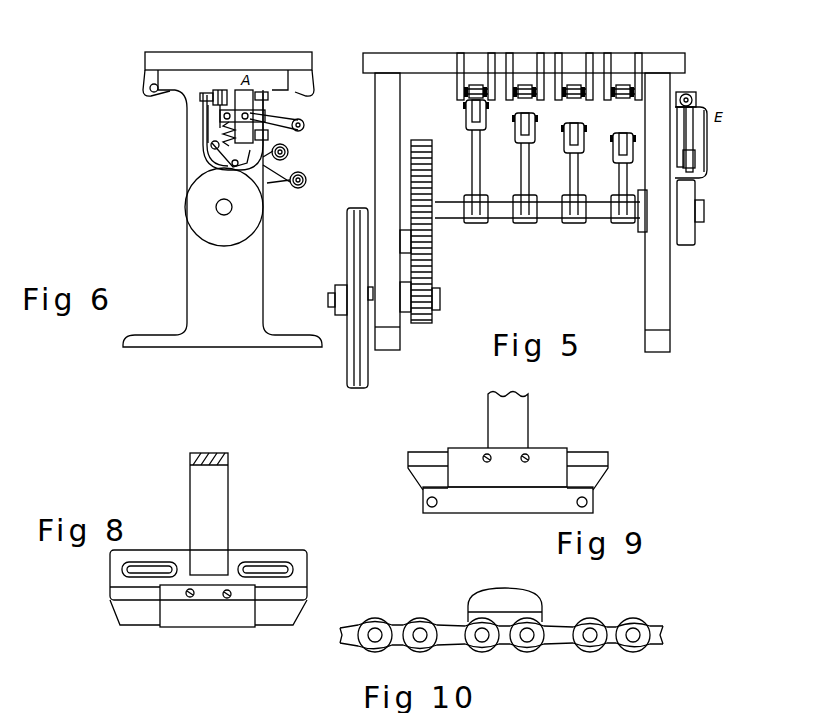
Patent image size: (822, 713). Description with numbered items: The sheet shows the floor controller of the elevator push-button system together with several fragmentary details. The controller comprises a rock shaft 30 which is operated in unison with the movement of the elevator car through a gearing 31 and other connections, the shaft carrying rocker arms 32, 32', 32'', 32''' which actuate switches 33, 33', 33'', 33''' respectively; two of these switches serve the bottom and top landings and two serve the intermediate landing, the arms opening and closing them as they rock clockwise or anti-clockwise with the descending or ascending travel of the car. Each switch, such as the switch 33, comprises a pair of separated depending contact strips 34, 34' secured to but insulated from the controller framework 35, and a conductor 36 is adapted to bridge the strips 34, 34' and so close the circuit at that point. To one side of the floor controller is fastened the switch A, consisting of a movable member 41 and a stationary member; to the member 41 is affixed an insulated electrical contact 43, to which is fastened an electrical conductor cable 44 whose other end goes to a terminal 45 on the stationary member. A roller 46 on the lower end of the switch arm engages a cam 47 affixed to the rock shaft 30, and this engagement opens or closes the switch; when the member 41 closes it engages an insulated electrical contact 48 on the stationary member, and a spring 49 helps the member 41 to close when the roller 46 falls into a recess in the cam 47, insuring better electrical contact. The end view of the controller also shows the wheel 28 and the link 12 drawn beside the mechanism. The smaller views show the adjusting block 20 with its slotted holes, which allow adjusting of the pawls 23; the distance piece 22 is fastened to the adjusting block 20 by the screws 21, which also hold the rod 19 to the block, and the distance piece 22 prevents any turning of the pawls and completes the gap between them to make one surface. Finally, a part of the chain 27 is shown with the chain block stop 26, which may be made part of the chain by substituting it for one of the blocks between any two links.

In FIG. 6, the link 12 is at (248, 116).
In FIG. 8, the rod 19 is at (217, 512).
In FIG. 9, the rod 19 is at (520, 420).
In FIG. 8, the adjusting block 20 is at (298, 578).
In FIG. 9, the adjusting block 20 is at (597, 458).
In FIG. 8, the screws 21 is at (229, 598).
In FIG. 9, the screws 21 is at (525, 462).
In FIG. 8, the distance piece 22 is at (175, 620).
In FIG. 9, the distance piece 22 is at (553, 460).
In FIG. 8, the pawls 23 is at (133, 615).
In FIG. 9, the pawls 23 is at (600, 492).
In FIG. 10, the chain block stop 26 is at (523, 607).
In FIG. 10, the chain 27 is at (567, 632).
In FIG. 5, the pulley 28 is at (357, 378).
In FIG. 6, the rock shaft 30 is at (233, 210).
In FIG. 5, the rock shaft 30 is at (500, 210).
In FIG. 5, the gearing 31 is at (428, 270).
In FIG. 5, the rocker arm 32 is at (459, 172).
In FIG. 5, the rocker arm 32' is at (510, 164).
In FIG. 5, the rocker arm 32'' is at (560, 169).
In FIG. 5, the rocker arm 32''' is at (609, 174).
In FIG. 5, the switch 33 is at (458, 92).
In FIG. 5, the switch 33' is at (525, 99).
In FIG. 5, the switch 33'' is at (576, 100).
In FIG. 5, the switch 33''' is at (624, 100).
In FIG. 5, the contact strip 34 is at (476, 61).
In FIG. 5, the contact strip 34' is at (517, 62).
In FIG. 6, the controller framework 35 is at (277, 58).
In FIG. 5, the controller framework 35 is at (447, 63).
In FIG. 5, the conductor 36 is at (461, 102).
In FIG. 6, the movable member 41 is at (208, 122).
In FIG. 5, the movable member 41 is at (687, 138).
In FIG. 6, the electrical contact 43 is at (217, 90).
In FIG. 5, the electrical contact 43 is at (694, 97).
In FIG. 6, the electrical conductor cable 44 is at (203, 157).
In FIG. 5, the electrical conductor cable 44 is at (707, 170).
In FIG. 6, the terminal 45 is at (268, 135).
In FIG. 6, the roller 46 is at (289, 154).
In FIG. 6, the cam 47 is at (200, 217).
In FIG. 5, the cam 47 is at (687, 230).
In FIG. 6, the electrical contact 48 is at (222, 92).
In FIG. 6, the spring 49 is at (222, 135).